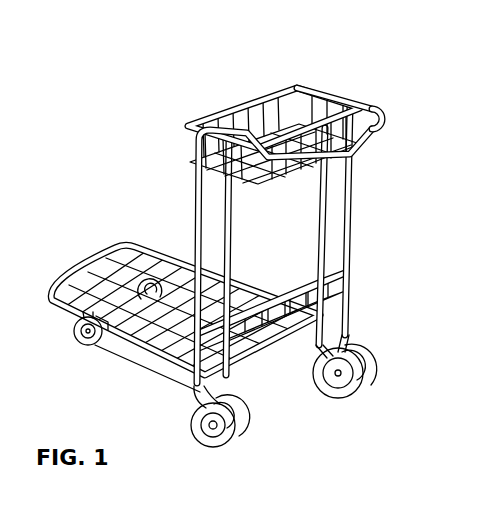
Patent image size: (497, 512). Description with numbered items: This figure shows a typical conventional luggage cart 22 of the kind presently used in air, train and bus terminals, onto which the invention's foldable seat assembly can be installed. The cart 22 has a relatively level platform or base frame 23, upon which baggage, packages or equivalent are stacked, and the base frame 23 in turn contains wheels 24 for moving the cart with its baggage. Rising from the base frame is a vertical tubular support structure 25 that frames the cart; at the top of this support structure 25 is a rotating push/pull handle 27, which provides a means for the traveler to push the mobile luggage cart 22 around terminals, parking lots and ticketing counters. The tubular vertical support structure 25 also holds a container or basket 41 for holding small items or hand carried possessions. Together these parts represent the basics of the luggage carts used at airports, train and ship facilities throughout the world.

The luggage cart 22 is at (335, 100).
The basket 41 is at (200, 124).
The rotating push/pull handle 27 is at (383, 131).
The vertical tubular support structure 25 is at (352, 222).
The base frame 23 is at (94, 252).
The wheels 24 is at (246, 410).